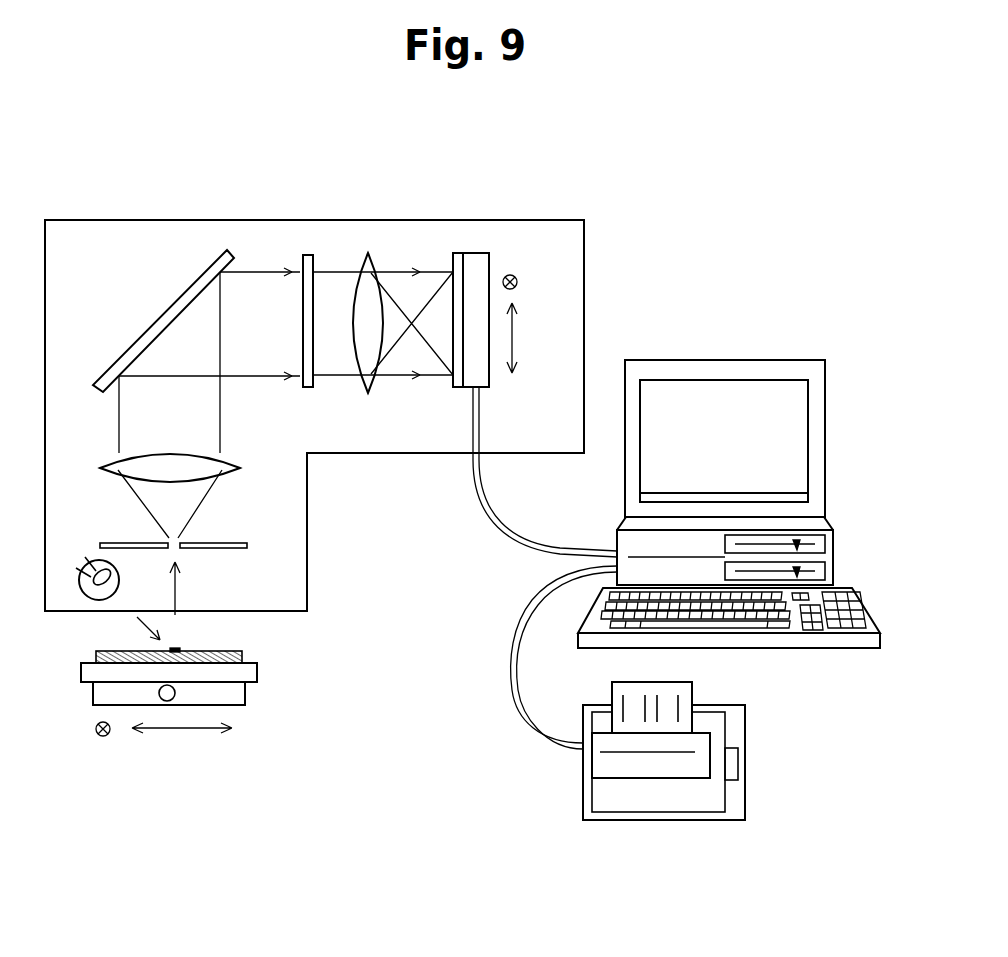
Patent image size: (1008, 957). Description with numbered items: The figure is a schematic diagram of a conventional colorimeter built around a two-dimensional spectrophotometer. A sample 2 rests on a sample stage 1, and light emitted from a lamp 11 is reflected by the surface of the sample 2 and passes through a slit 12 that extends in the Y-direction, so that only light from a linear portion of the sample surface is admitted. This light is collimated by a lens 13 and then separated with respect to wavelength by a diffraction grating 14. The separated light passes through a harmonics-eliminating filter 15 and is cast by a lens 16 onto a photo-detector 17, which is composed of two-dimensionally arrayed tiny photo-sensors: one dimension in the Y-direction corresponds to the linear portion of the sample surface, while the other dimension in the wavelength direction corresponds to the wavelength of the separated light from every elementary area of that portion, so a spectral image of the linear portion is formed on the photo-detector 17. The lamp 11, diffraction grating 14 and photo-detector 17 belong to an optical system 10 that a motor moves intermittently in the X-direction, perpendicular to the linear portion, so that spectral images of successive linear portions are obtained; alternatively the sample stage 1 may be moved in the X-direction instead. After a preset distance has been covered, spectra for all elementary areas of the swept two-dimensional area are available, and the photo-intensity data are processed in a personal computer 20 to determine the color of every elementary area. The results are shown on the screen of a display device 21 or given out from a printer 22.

The sample stage 1 is at (245, 688).
The sample 2 is at (245, 655).
The optical system 10 is at (301, 219).
The lamp 11 is at (100, 562).
The slit 12 is at (220, 543).
The lens 13 is at (212, 468).
The diffraction grating 14 is at (142, 333).
The harmonics-eliminating filter 15 is at (307, 388).
The lens 16 is at (372, 387).
The photo-detector 17 is at (490, 373).
The personal computer 20 is at (832, 555).
The display device 21 is at (717, 360).
The printer 22 is at (743, 753).